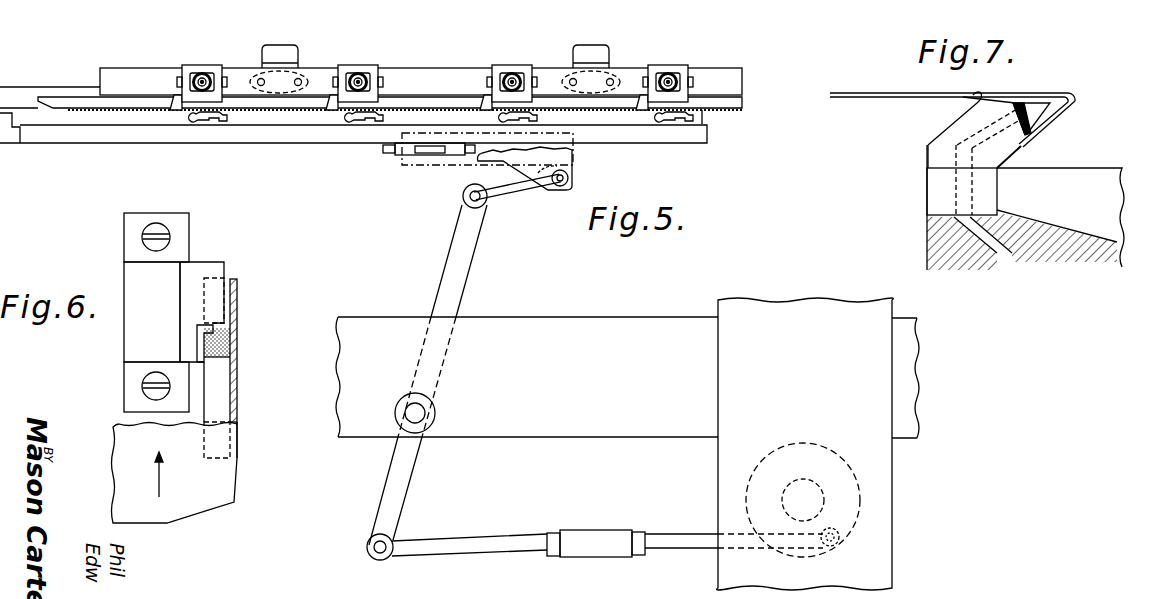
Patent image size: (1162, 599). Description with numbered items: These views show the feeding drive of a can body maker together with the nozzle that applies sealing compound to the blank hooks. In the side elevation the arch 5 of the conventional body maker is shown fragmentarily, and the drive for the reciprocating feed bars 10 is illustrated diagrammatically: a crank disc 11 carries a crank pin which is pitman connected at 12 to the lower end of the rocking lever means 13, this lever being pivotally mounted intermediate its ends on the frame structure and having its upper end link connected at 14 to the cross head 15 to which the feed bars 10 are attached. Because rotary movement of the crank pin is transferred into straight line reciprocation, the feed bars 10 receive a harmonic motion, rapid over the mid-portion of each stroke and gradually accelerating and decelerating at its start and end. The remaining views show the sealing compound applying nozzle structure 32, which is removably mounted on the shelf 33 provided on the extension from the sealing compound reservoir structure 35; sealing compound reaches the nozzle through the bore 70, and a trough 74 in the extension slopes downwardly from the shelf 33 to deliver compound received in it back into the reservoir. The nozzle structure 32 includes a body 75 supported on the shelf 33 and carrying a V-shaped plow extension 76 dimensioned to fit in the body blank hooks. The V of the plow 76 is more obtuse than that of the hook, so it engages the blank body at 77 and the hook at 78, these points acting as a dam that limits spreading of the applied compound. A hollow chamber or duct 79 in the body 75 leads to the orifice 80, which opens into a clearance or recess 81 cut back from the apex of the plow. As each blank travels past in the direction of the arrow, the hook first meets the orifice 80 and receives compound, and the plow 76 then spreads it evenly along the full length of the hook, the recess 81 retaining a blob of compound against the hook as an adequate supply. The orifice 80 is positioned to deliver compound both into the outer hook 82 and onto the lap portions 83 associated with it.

In FIG. 5, the arch 5 is at (718, 407).
In FIG. 5, the reciprocating feed bars 10 is at (407, 120).
In FIG. 5, the crank disc 11 is at (793, 420).
In FIG. 5, the pitman connection 12 is at (686, 523).
In FIG. 5, the rocking lever means 13 is at (465, 258).
In FIG. 5, the link connection 14 is at (516, 187).
In FIG. 5, the cross head 15 is at (566, 160).
In FIG. 6, the sealing compound applying nozzle structure 32 is at (116, 391).
In FIG. 7, the sealing compound applying nozzle structure 32 is at (908, 146).
In FIG. 7, the shelf 33 is at (937, 238).
In FIG. 7, the sealing compound reservoir structure 35 is at (1128, 180).
In FIG. 7, the bore 70 is at (988, 248).
In FIG. 7, the trough 74 is at (1080, 227).
In FIG. 6, the body 75 is at (137, 281).
In FIG. 7, the body 75 is at (943, 153).
In FIG. 6, the V-shaped plow extension 76 is at (210, 268).
In FIG. 7, the V-shaped plow extension 76 is at (1042, 107).
In FIG. 6, the point of engagement with blank body 77 is at (173, 280).
In FIG. 7, the point of engagement with blank body 77 is at (970, 111).
In FIG. 7, the point of engagement with hook 78 is at (1020, 153).
In FIG. 7, the hollow chamber or duct 79 is at (940, 167).
In FIG. 6, the orifice 80 is at (205, 346).
In FIG. 7, the orifice 80 is at (1021, 104).
In FIG. 6, the clearance or recess 81 is at (190, 333).
In FIG. 7, the clearance or recess 81 is at (1036, 124).
In FIG. 6, the outer hook 82 is at (218, 392).
In FIG. 7, the outer hook 82 is at (1070, 110).
In FIG. 6, the lap portions 83 is at (217, 485).
In FIG. 7, the lap portions 83 is at (1062, 98).